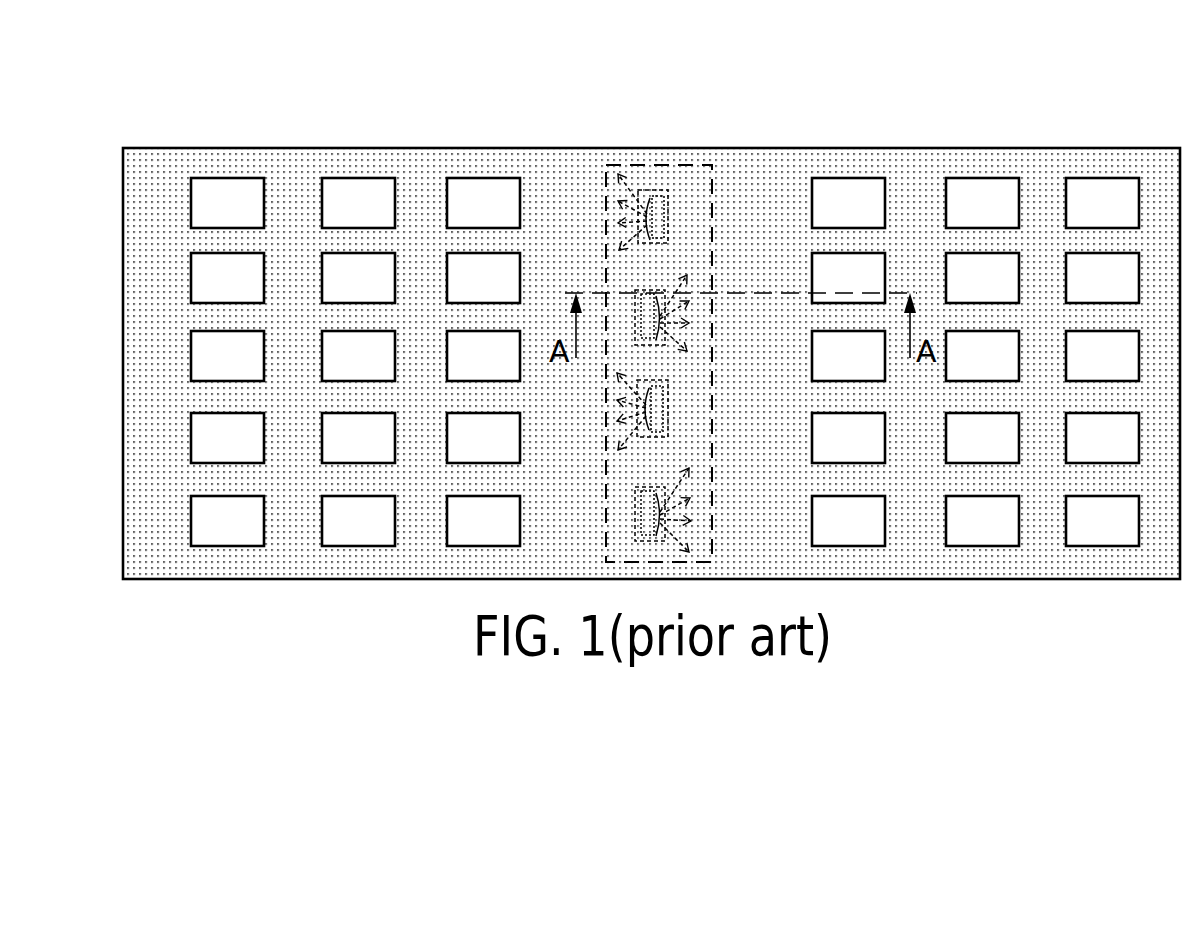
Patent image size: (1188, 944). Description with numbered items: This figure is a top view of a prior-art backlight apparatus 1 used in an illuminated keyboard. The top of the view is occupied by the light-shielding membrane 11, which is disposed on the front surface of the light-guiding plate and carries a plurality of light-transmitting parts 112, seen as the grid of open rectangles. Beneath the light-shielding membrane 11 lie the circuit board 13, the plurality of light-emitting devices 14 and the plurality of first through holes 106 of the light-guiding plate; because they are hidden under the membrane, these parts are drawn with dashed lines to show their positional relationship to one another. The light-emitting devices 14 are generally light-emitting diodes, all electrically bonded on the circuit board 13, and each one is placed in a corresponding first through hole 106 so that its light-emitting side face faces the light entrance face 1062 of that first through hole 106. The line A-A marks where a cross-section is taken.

The backlight apparatus 1 is at (541, 95).
The light-shielding membrane 11 is at (418, 180).
The light-transmitting parts 112 is at (847, 190).
The circuit board 13 is at (713, 180).
The first through holes 106 is at (645, 186).
The light-emitting devices 14 is at (656, 210).
The light entrance face 1062 is at (666, 331).